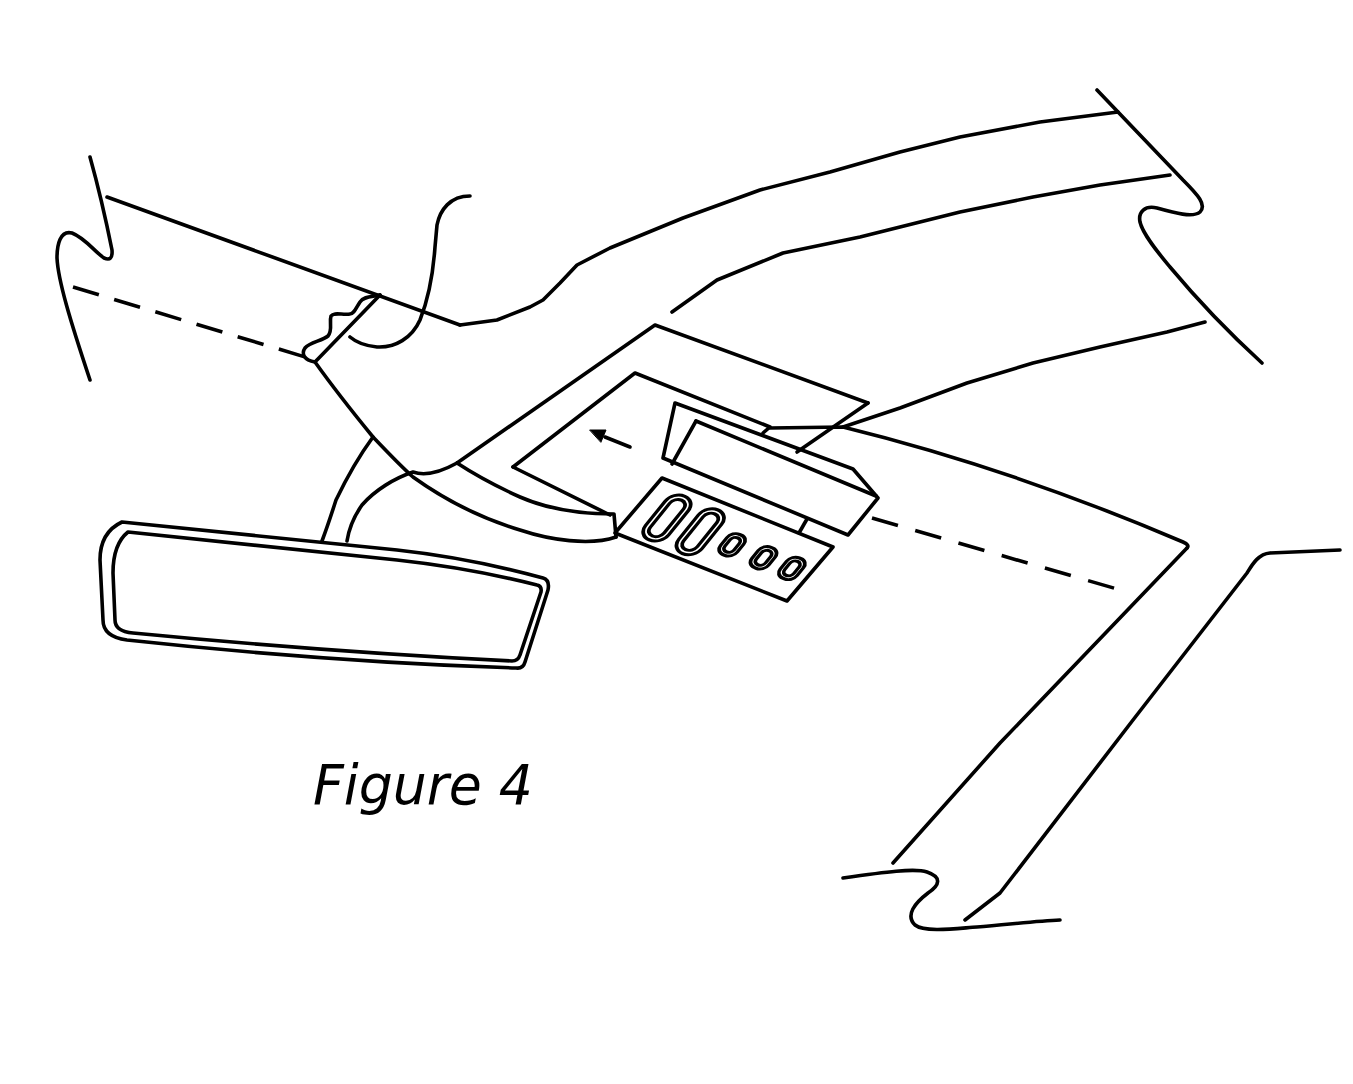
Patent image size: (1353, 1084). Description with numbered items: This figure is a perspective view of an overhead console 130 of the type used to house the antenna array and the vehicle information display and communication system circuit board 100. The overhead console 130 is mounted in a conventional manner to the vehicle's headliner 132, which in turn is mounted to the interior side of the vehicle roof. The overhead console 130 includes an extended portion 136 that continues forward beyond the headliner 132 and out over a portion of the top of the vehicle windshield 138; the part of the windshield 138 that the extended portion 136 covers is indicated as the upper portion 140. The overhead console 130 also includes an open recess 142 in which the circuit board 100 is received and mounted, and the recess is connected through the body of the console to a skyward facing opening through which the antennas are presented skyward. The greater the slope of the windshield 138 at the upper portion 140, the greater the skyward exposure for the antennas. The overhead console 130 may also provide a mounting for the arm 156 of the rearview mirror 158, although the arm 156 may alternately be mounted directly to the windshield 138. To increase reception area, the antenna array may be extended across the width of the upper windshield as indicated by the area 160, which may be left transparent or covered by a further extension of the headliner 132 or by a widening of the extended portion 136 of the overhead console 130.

The vehicle information display and communication system circuit board 100 is at (817, 587).
The overhead console 130 is at (687, 215).
The headliner 132 is at (335, 204).
The extended portion 136 is at (468, 196).
The windshield 138 is at (885, 733).
The upper portion of the windshield 140 is at (329, 326).
The open recess 142 is at (677, 387).
The arm 156 is at (333, 478).
The rearview mirror 158 is at (187, 527).
The area 160 is at (195, 285).